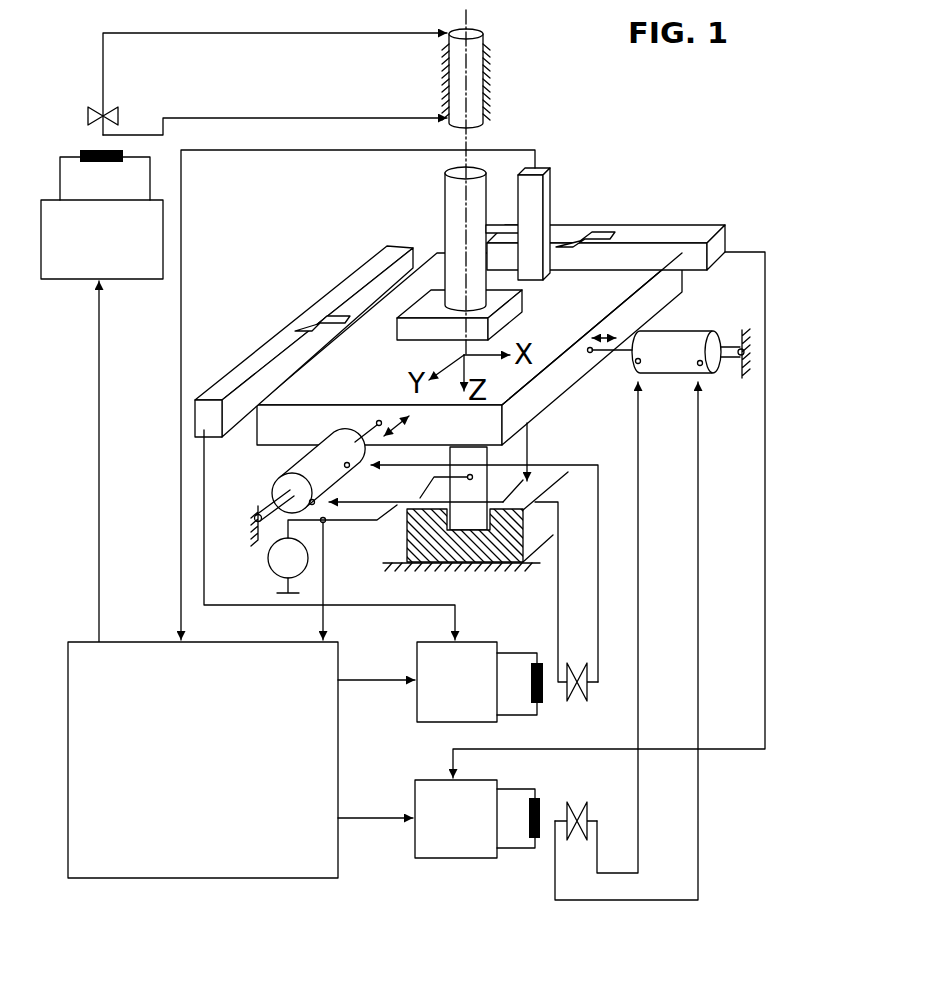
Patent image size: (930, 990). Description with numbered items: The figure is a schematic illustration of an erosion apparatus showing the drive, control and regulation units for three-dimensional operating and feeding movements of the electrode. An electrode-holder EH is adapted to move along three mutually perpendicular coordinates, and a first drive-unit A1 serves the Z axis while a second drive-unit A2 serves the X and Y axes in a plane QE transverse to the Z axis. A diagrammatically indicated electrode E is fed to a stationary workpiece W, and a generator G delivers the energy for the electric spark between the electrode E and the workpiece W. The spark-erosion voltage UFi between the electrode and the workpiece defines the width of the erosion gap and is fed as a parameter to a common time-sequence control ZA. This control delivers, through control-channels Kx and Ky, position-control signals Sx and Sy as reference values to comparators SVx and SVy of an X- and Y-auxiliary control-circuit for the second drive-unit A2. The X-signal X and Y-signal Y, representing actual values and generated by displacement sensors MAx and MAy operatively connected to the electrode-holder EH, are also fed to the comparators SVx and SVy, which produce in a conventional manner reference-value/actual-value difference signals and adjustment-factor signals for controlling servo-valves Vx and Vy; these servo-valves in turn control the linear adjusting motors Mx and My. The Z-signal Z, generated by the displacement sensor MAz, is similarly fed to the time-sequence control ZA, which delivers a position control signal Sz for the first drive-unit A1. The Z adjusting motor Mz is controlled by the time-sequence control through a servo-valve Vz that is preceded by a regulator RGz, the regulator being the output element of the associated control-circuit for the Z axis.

The plane QE is at (380, 377).
The displacement sensor MAy is at (272, 348).
The displacement sensor MAx is at (635, 230).
The displacement sensor MAz is at (545, 193).
The electrode-holder EH is at (567, 377).
The electrode E is at (522, 457).
The workpiece W is at (412, 535).
The linear adjusting motor Mx is at (687, 345).
The linear adjusting motor My is at (328, 473).
The Z adjusting motor Mz is at (475, 80).
The first drive-unit A1 is at (312, 93).
The servo-valve Vz is at (120, 112).
The regulator RGz is at (102, 214).
The position control signal Sz is at (112, 292).
The Z-signal Z is at (175, 628).
The common time-sequence control ZA is at (222, 785).
The generator G is at (268, 565).
The spark-erosion voltage UFi is at (333, 633).
The Y-signal Y is at (465, 633).
The comparator SVy is at (480, 682).
The control-channel Ky is at (376, 665).
The position-control signal Sy is at (407, 690).
The servo-valve Vy is at (463, 606).
The X-signal X is at (450, 773).
The second drive-unit A2 is at (690, 651).
The comparator SVx is at (477, 819).
The control-channel Kx is at (375, 804).
The position-control signal Sx is at (407, 825).
The servo-valve Vx is at (556, 849).